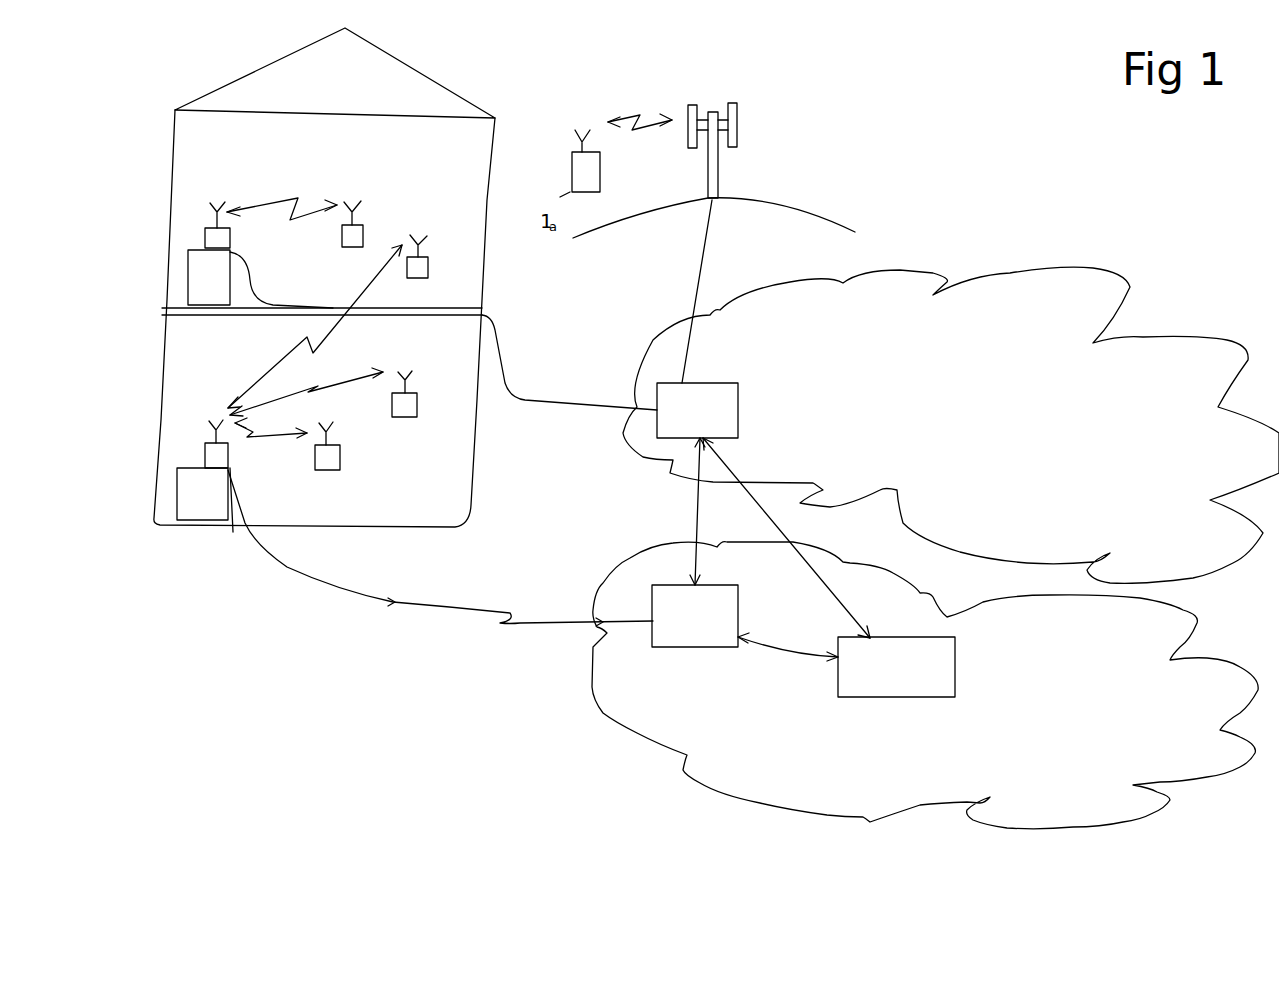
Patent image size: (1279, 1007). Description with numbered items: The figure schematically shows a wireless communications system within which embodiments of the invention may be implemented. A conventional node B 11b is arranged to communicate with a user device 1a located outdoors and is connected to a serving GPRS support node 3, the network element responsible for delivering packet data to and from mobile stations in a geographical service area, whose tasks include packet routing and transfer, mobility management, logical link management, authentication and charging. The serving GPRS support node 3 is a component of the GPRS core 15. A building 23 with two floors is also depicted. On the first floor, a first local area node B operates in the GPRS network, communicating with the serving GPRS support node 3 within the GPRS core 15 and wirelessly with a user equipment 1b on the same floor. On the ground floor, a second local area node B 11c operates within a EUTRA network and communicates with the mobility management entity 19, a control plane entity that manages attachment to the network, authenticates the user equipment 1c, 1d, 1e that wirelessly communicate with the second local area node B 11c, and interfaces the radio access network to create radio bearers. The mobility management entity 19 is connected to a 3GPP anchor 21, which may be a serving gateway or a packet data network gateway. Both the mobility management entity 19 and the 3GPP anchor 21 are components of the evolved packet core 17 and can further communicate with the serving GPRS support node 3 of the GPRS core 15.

The mobile terminal 1a is at (205, 237).
The user equipment 1b is at (338, 242).
The user equipment 1c is at (405, 268).
The user equipment 1d is at (400, 417).
The user equipment 1e is at (313, 464).
The node B 11b is at (741, 243).
The second local area node B 11c is at (205, 455).
The serving GPRS support node 3 is at (727, 383).
The GPRS core 15 is at (653, 342).
The evolved packet core 17 is at (625, 562).
The mobility management entity 19 is at (650, 648).
The 3GPP anchor 21 is at (897, 697).
The building 23 is at (170, 150).